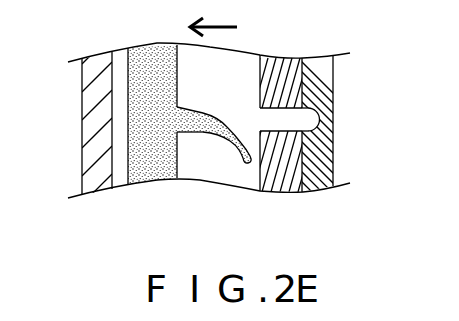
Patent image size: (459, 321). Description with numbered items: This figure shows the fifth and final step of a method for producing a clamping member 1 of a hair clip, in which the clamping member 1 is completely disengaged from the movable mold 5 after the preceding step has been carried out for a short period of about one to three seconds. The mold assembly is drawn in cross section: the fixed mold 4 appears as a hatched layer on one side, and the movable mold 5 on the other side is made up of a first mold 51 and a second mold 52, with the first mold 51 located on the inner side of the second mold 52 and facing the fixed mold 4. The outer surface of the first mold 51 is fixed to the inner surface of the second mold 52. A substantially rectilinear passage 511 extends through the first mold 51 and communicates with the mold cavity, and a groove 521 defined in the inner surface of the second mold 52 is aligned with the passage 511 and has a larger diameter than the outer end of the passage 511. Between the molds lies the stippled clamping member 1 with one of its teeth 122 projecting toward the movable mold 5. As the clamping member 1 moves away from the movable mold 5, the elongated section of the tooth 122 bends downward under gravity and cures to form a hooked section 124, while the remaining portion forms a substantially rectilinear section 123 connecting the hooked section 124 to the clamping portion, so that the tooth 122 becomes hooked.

The clamping member 1 is at (164, 138).
The fixed mold 4 is at (100, 157).
The movable mold 5 is at (334, 145).
The first mold 51 is at (280, 78).
The substantially rectilinear passage 511 is at (279, 113).
The second mold 52 is at (318, 157).
The groove 521 is at (333, 140).
The tooth 122 is at (198, 126).
The substantially rectilinear section 123 is at (232, 138).
The hooked section 124 is at (250, 158).